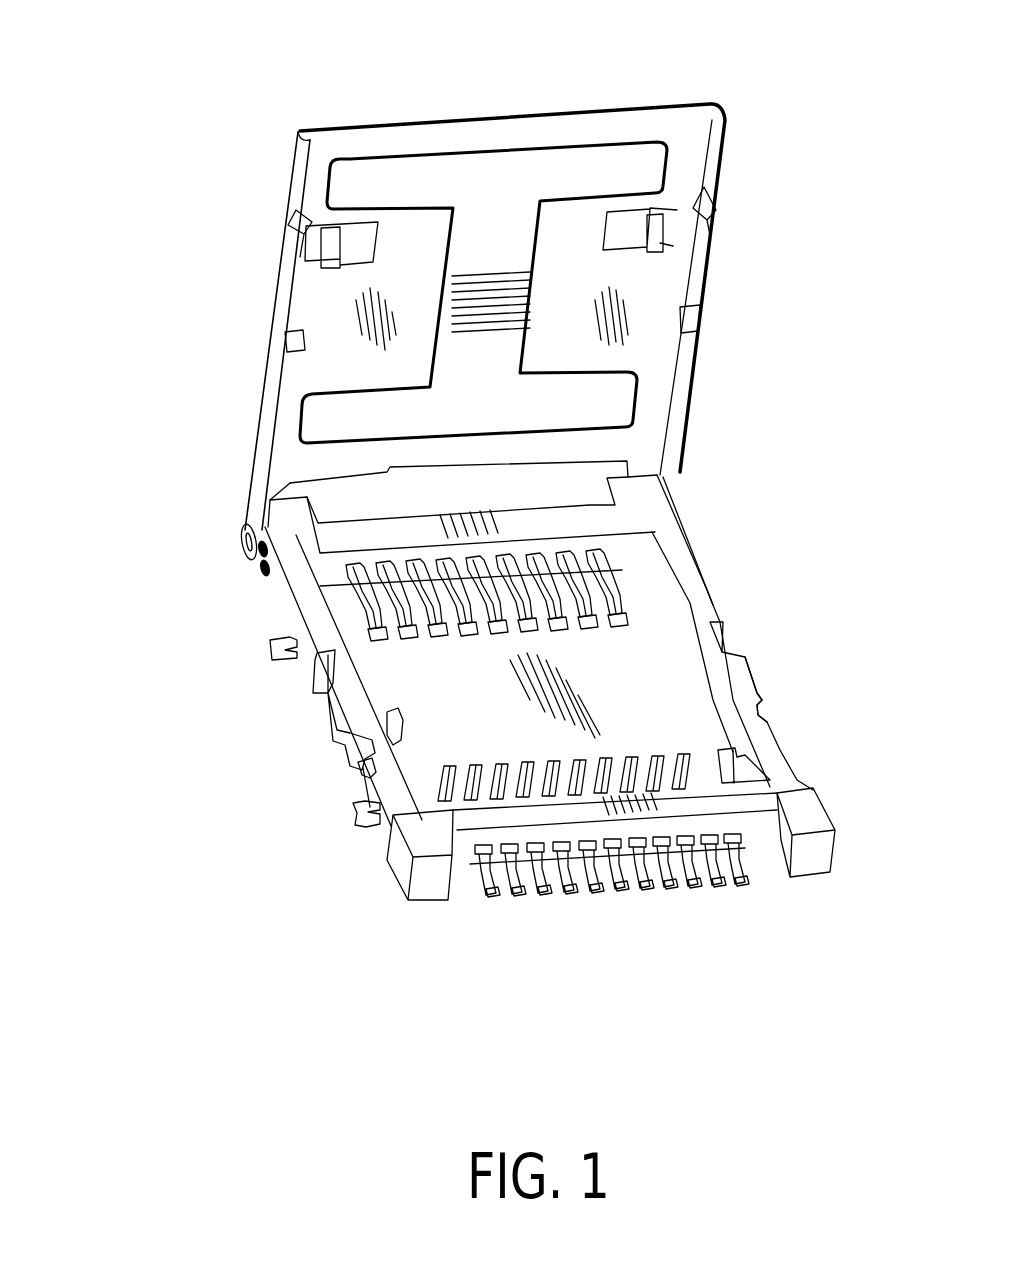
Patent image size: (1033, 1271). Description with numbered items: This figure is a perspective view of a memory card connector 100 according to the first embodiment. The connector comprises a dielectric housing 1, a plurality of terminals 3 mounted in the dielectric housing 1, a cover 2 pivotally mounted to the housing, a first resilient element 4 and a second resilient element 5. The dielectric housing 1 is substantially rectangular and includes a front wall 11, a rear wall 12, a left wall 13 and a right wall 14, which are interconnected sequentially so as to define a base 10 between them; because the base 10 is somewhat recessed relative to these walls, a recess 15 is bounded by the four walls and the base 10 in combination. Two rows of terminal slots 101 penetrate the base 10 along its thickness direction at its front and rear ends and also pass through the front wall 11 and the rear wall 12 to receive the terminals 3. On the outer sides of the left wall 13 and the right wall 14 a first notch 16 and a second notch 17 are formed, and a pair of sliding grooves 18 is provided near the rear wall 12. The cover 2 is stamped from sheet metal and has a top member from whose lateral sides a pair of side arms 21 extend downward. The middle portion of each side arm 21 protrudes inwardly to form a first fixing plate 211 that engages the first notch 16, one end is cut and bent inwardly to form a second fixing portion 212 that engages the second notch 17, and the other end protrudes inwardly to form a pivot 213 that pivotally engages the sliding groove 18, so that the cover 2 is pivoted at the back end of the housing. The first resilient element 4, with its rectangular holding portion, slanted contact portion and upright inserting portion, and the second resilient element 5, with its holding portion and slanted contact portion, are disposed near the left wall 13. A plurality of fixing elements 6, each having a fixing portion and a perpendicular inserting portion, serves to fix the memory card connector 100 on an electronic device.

The memory card connector 100 is at (165, 50).
The dielectric housing 1 is at (670, 538).
The cover 2 is at (550, 132).
The terminals 3 is at (590, 882).
The first resilient element 4 is at (743, 760).
The second resilient element 5 is at (620, 583).
The fixing elements 6 is at (362, 835).
The base 10 is at (677, 677).
The front wall 11 is at (470, 845).
The rear wall 12 is at (348, 583).
The left wall 13 is at (770, 771).
The right wall 14 is at (360, 697).
The recess 15 is at (697, 723).
The first notch 16 is at (322, 680).
The second notch 17 is at (360, 765).
The sliding grooves 18 is at (256, 567).
The side arms 21 is at (266, 420).
The terminal slots 101 is at (740, 842).
The first fixing plate 211 is at (282, 326).
The second fixing portion 212 is at (291, 218).
The pivot 213 is at (247, 530).